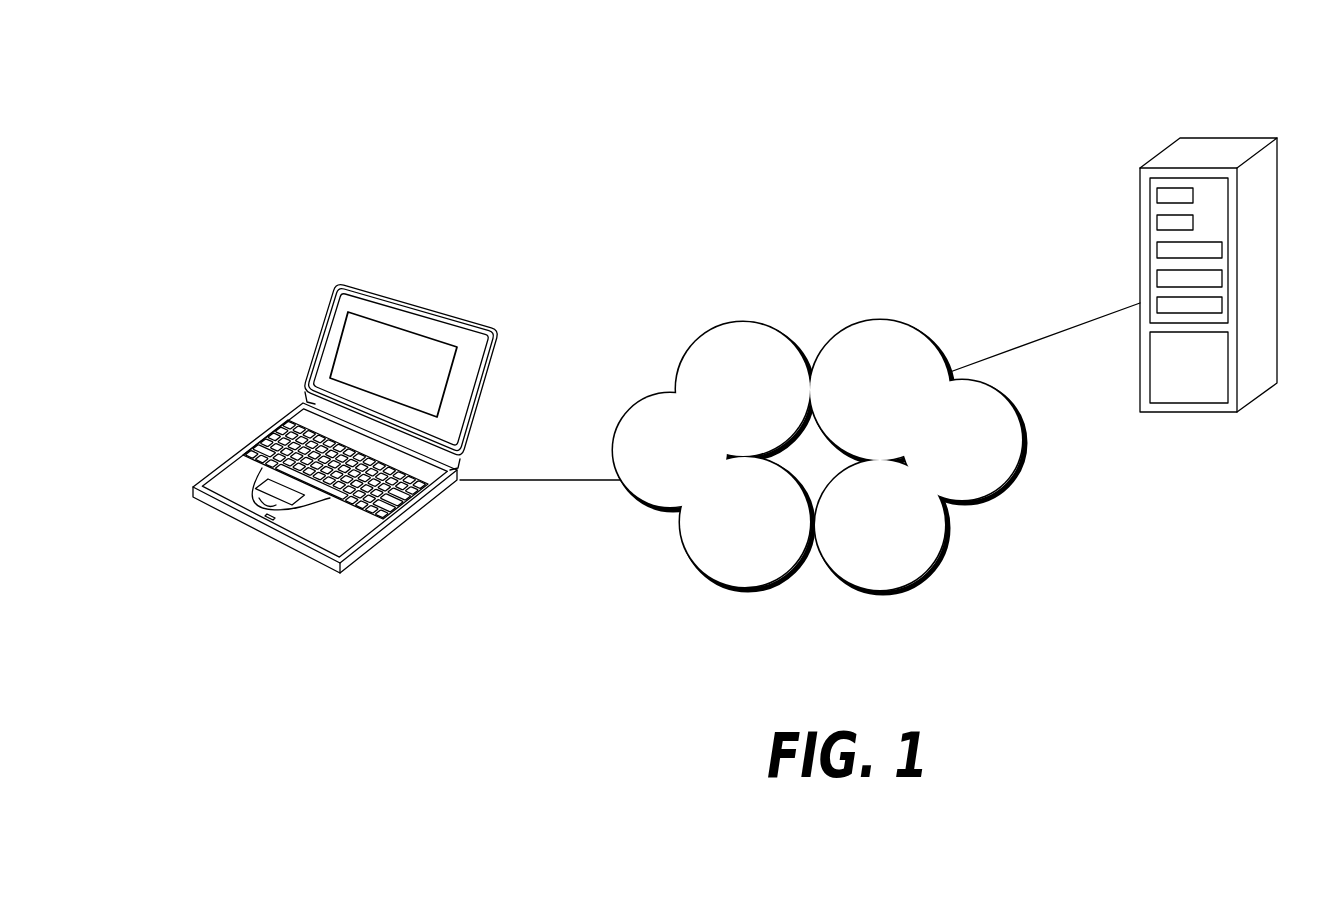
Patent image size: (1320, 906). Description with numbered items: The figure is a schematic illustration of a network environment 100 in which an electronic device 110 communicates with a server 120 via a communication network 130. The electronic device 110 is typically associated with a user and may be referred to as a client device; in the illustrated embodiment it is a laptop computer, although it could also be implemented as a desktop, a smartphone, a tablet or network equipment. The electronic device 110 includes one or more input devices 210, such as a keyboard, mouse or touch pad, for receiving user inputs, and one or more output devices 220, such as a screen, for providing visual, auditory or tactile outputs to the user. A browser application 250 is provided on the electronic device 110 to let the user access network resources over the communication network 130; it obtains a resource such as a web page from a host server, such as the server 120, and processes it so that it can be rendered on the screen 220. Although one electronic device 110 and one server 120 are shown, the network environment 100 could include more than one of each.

The network environment 100 is at (626, 191).
The electronic device 110 is at (473, 322).
The server 120 is at (1240, 137).
The communication network 130 is at (835, 467).
The input device 210 is at (267, 442).
The output device 220 is at (356, 355).
The browser application 250 is at (372, 318).